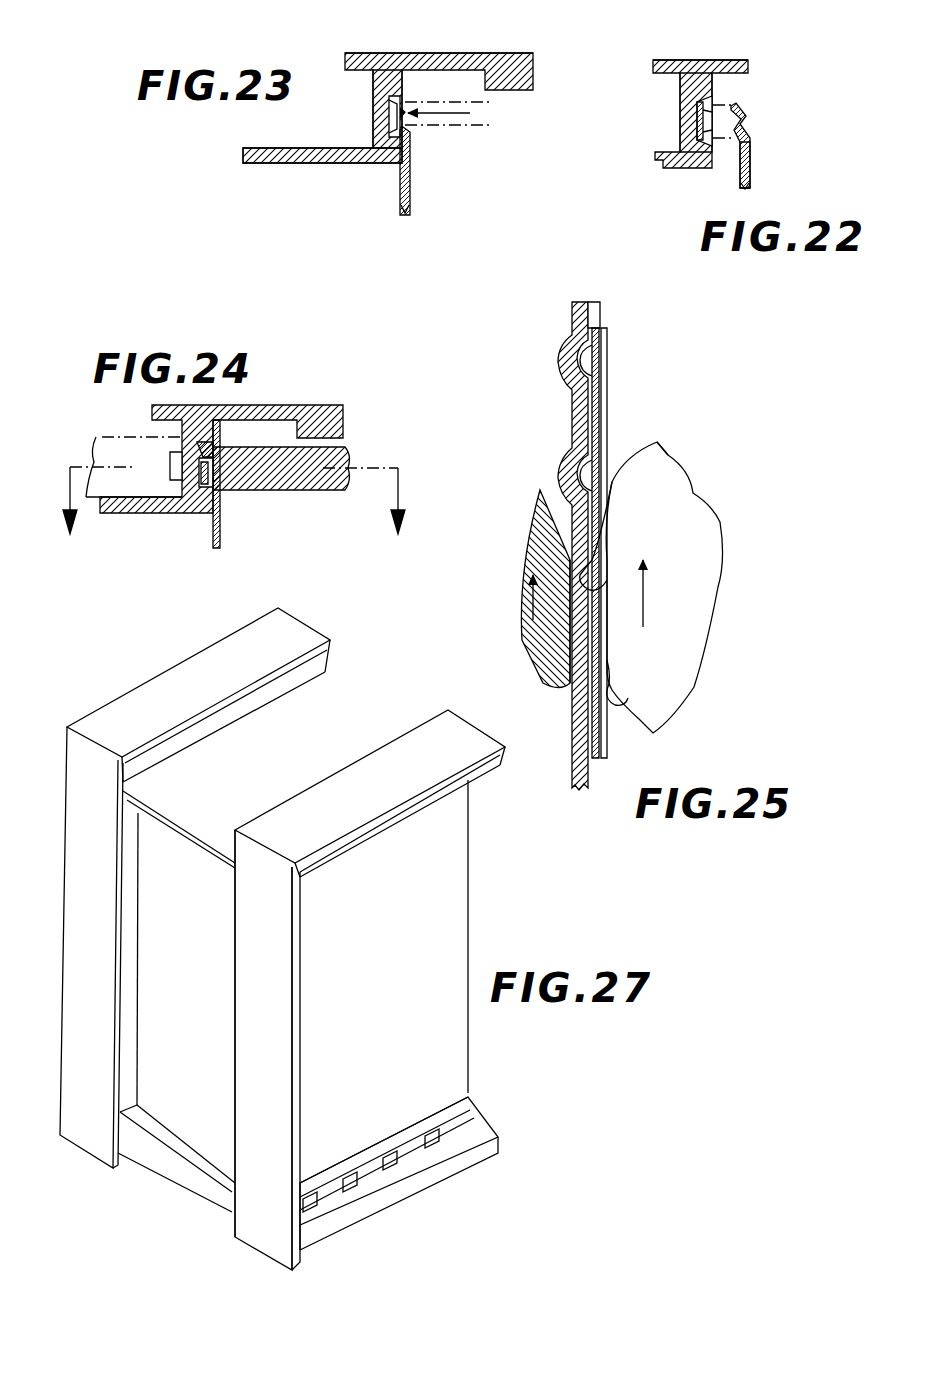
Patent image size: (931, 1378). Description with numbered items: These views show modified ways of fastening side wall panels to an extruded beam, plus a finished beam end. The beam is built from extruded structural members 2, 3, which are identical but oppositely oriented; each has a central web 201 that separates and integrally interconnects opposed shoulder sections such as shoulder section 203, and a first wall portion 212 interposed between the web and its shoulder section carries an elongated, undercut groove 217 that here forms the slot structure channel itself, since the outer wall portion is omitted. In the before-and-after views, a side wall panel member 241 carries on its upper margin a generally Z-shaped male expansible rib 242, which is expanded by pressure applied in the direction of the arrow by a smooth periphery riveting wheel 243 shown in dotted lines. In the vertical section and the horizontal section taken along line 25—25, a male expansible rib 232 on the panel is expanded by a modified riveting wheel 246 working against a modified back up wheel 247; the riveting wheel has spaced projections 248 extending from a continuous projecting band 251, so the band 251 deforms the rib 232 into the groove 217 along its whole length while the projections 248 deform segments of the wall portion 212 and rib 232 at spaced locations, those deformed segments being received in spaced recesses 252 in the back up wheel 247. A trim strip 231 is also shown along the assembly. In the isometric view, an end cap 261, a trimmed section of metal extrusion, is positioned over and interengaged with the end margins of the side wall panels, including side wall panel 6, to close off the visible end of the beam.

In FIG. 23, the extruded structural member 2 is at (392, 52).
In FIG. 22, the extruded structural member 2 is at (686, 58).
In FIG. 27, the extruded structural member 2 is at (352, 697).
In FIG. 27, the extruded structural member 3 is at (478, 1130).
In FIG. 27, the side wall panel 6 is at (384, 1044).
In FIG. 24, the section line 25— 25 is at (235, 512).
In FIG. 23, the central web 201 is at (273, 163).
In FIG. 23, the shoulder section 203 is at (463, 60).
In FIG. 22, the shoulder section 203 is at (741, 61).
In FIG. 23, the first wall portion 212 is at (378, 80).
In FIG. 22, the first wall portion 212 is at (681, 92).
In FIG. 24, the first wall portion 212 is at (183, 432).
In FIG. 25, the first wall portion 212 is at (573, 410).
In FIG. 23, the elongated groove 217 is at (389, 113).
In FIG. 22, the elongated groove 217 is at (698, 122).
In FIG. 24, the elongated groove 217 is at (198, 478).
In FIG. 25, the elongated groove 217 is at (597, 310).
In FIG. 24, the trim strip 231 is at (221, 540).
In FIG. 24, the male expansible rib 232 is at (216, 452).
In FIG. 25, the male expansible rib 232 is at (596, 414).
In FIG. 23, the side wall panel member 241 is at (400, 203).
In FIG. 22, the side wall panel member 241 is at (752, 177).
In FIG. 22, the Z-shaped male expansible rib 242 is at (749, 118).
In FIG. 23, the riveting wheel 243 is at (455, 127).
In FIG. 24, the modified riveting wheel 246 is at (348, 457).
In FIG. 25, the modified riveting wheel 246 is at (687, 487).
In FIG. 24, the modified back up wheel 247 is at (118, 435).
In FIG. 25, the modified back up wheel 247 is at (535, 518).
In FIG. 25, the projections 248 is at (617, 470).
In FIG. 25, the continuous projecting band 251 is at (658, 446).
In FIG. 25, the recesses 252 is at (563, 585).
In FIG. 27, the end cap 261 is at (298, 987).